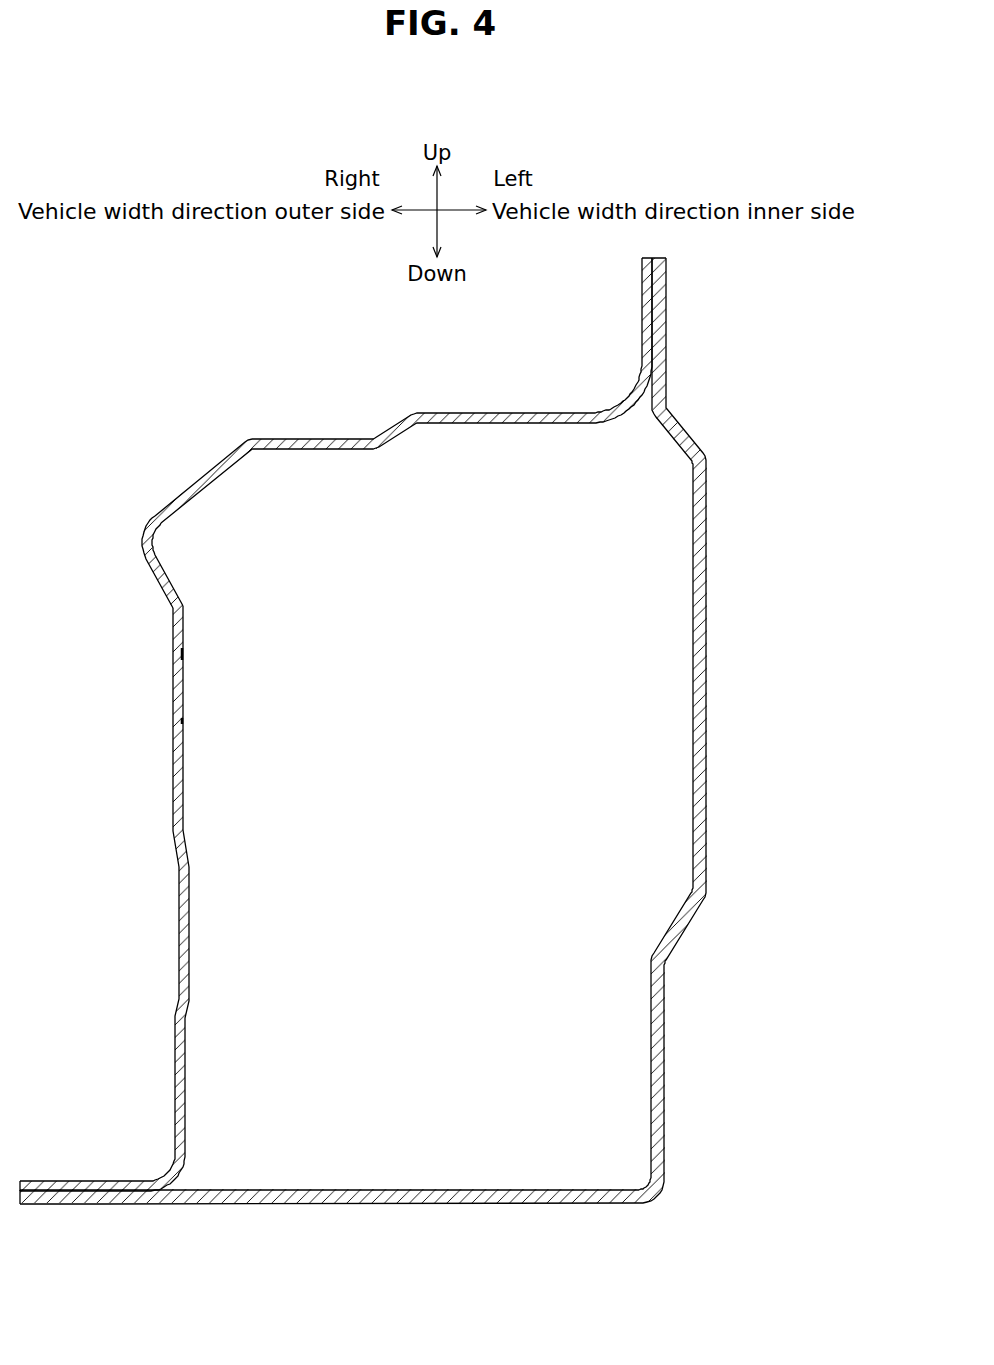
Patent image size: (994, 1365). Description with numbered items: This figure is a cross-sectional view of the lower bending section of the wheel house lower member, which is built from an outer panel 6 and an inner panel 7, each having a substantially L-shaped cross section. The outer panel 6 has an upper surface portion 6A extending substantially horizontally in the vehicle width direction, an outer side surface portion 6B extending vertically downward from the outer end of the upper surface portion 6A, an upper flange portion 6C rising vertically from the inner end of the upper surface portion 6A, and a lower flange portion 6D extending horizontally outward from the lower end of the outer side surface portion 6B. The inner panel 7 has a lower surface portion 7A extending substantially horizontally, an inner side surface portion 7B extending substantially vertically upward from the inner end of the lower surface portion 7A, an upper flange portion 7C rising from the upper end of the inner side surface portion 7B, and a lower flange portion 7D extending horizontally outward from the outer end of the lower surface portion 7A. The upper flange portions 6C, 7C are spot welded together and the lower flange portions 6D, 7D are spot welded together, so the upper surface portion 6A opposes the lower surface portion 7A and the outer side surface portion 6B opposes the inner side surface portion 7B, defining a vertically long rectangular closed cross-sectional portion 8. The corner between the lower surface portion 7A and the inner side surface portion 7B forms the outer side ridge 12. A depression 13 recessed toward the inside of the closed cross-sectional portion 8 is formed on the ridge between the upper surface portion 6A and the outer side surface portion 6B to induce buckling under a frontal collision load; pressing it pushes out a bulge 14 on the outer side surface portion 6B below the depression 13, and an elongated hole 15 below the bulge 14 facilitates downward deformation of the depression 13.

The outer panel 6 is at (336, 724).
The upper surface portion 6A is at (500, 412).
The outer side surface portion 6B is at (173, 793).
The upper flange portion 6C is at (642, 301).
The lower flange portion 6D is at (97, 1182).
The inner panel 7 is at (403, 761).
The lower surface portion 7A is at (385, 1205).
The inner side surface portion 7B is at (707, 680).
The upper flange portion 7C is at (667, 329).
The lower flange portion 7D is at (85, 1205).
The rectangular closed cross-sectional portion 8 is at (441, 791).
The outer side ridge 12 is at (660, 1196).
The depression 13 is at (196, 474).
The bulge 14 is at (142, 541).
The elongated hole 15 is at (173, 660).